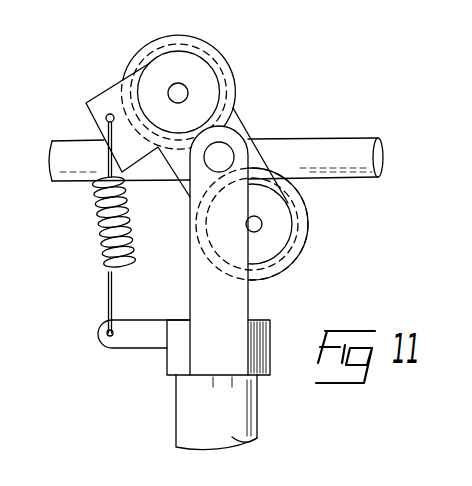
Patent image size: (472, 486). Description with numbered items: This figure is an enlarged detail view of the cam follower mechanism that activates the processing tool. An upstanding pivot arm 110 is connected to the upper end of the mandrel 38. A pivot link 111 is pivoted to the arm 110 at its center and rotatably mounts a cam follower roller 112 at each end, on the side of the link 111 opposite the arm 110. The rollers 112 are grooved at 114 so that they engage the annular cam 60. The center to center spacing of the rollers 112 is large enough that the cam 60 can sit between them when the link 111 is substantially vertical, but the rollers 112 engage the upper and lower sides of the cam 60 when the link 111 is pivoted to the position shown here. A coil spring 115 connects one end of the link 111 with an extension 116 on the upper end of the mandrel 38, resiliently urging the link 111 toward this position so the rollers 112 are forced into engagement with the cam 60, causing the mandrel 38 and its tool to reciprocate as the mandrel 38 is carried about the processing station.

The mandrel 38 is at (257, 410).
The annular cam 60 is at (322, 136).
The pivot arm 110 is at (239, 304).
The pivot link 111 is at (233, 116).
The cam follower roller 112 is at (192, 38).
The groove 114 is at (226, 73).
The coil spring 115 is at (103, 252).
The extension 116 is at (121, 348).